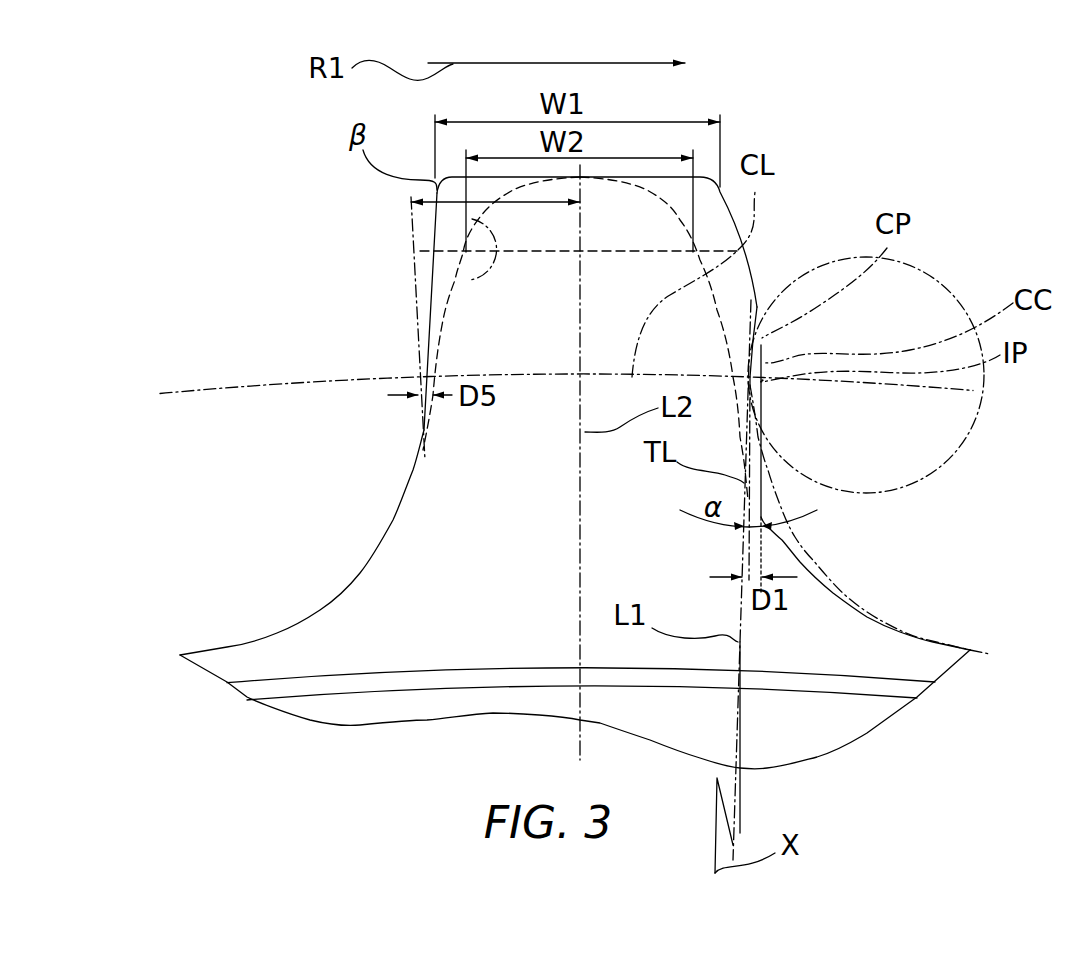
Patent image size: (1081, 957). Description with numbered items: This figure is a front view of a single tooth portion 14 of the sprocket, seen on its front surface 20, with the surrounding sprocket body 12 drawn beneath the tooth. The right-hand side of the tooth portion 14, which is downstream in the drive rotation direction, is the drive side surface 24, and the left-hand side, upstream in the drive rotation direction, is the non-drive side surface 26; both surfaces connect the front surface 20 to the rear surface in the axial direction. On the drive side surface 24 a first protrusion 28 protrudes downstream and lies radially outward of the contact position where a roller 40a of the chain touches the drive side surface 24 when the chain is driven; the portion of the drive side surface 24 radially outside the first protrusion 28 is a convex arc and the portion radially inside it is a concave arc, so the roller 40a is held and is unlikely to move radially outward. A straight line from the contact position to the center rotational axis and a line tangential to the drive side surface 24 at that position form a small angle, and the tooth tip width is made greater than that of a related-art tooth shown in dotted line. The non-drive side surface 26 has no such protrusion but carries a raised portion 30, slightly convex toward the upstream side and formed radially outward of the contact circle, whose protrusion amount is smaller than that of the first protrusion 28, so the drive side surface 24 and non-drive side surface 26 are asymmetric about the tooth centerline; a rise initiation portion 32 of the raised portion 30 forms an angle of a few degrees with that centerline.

The gear body 12 is at (818, 740).
The tooth portion 14 is at (772, 218).
The front surface 20 is at (470, 463).
The drive side surface 24 is at (761, 405).
The non-drive side surface 26 is at (413, 422).
The first protrusion 28 is at (757, 307).
The raised portion 30 is at (420, 328).
The tip relief 32 is at (480, 282).
The roller 40a is at (910, 263).